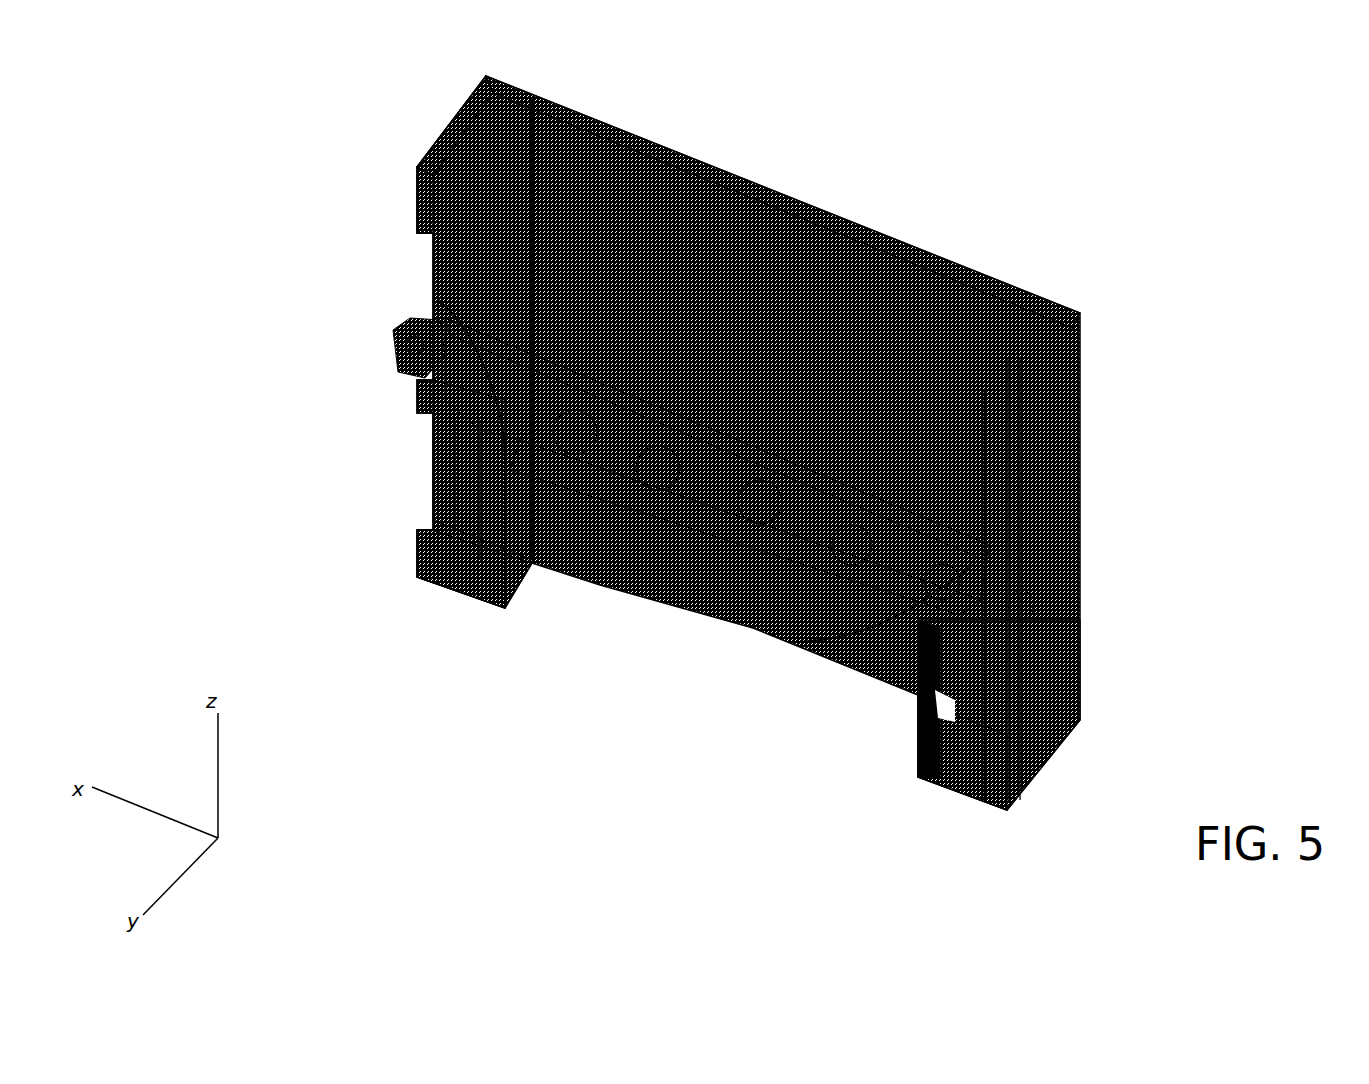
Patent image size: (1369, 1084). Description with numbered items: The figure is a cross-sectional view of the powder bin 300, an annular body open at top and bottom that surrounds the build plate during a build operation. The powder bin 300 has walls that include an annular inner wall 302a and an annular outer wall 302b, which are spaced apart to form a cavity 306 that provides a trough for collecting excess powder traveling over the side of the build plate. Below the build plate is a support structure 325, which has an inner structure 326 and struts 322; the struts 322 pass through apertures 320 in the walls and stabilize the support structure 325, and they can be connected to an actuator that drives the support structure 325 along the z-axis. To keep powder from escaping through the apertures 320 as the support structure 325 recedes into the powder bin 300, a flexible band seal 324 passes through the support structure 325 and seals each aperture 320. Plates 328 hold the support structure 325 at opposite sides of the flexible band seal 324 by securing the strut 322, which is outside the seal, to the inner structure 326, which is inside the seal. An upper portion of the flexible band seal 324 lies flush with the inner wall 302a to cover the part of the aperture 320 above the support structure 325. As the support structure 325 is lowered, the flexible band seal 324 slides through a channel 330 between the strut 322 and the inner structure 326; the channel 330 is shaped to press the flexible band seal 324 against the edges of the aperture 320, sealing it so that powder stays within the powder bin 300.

The powder bin 300 is at (1003, 158).
The annular inner wall 302a is at (460, 132).
The annular outer wall 302b is at (432, 153).
The cavity 306 is at (423, 203).
The aperture 320 is at (422, 493).
The strut 322 is at (405, 370).
The flexible band seal 324 is at (520, 575).
The support structure 325 is at (723, 483).
The inner structure 326 is at (715, 523).
The plate 328 is at (437, 300).
The channel 330 is at (800, 642).